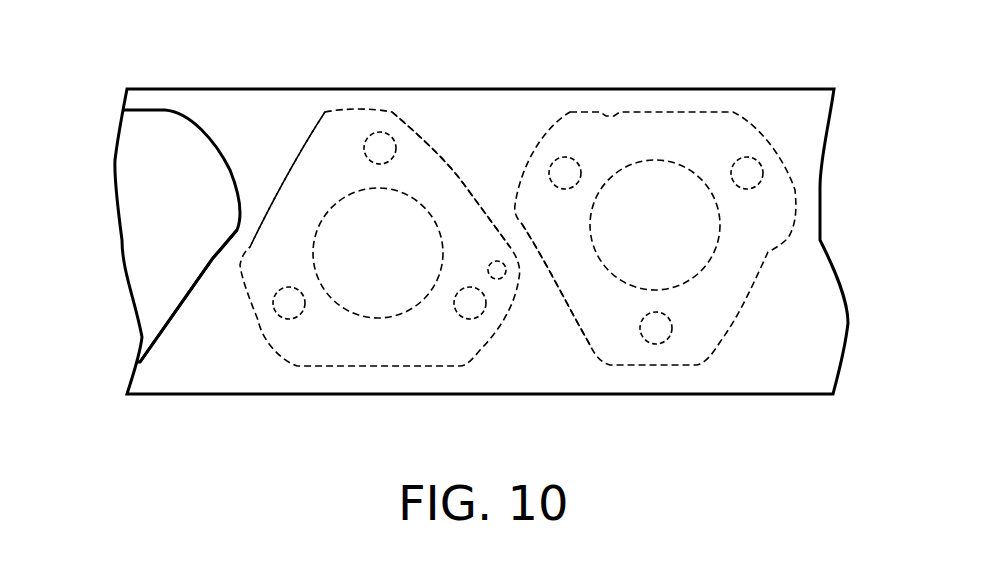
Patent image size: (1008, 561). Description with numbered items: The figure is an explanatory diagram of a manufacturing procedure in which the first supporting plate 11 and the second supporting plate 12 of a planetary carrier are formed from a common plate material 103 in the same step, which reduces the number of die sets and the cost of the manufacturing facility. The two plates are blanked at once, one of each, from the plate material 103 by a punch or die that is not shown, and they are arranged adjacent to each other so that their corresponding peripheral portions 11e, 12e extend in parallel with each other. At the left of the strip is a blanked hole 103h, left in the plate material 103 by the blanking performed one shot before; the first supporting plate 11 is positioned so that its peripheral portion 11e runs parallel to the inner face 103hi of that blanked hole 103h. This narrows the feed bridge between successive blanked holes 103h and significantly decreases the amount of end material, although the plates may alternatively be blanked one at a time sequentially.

The plate material 103 is at (788, 110).
The blanked hole 103h is at (166, 140).
The inner face of blanked hole 103hi is at (235, 233).
The first supporting plate 11 is at (375, 122).
The peripheral portion of first supporting plate 11e is at (275, 232).
The second supporting plate 12 is at (667, 122).
The peripheral portion of second supporting plate 12e is at (530, 228).